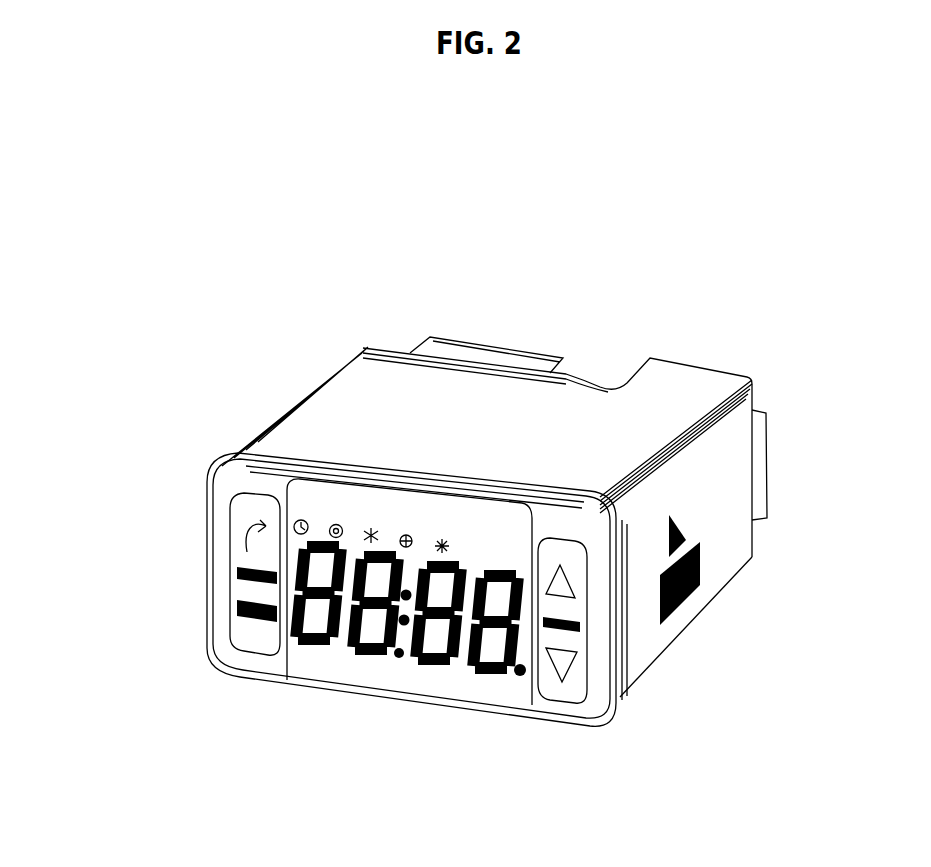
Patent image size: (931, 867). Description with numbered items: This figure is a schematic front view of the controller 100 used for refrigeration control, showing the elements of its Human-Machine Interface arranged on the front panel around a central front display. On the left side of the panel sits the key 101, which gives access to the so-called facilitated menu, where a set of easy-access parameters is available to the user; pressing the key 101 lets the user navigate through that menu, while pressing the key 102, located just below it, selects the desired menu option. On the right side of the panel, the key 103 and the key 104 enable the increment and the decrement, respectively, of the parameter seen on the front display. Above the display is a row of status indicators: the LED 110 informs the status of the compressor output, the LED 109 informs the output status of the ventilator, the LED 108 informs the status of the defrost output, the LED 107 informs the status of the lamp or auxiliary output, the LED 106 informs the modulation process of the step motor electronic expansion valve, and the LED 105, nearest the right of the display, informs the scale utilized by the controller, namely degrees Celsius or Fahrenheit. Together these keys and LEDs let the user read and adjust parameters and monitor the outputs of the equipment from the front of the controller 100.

The controller 100 is at (435, 449).
The key 101 is at (247, 535).
The key 102 is at (237, 607).
The key 103 is at (572, 583).
The key 104 is at (573, 665).
The LED 105 is at (513, 540).
The LED 106 is at (442, 536).
The LED 107 is at (405, 531).
The LED 108 is at (372, 524).
The LED 109 is at (335, 520).
The LED 110 is at (300, 515).